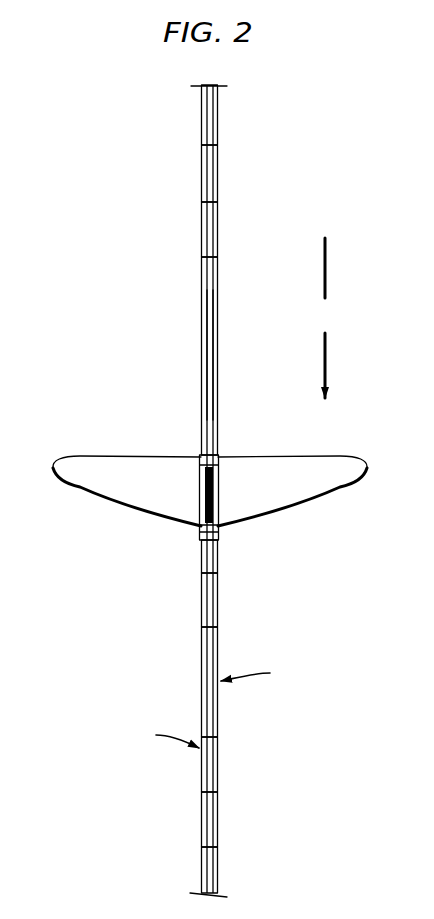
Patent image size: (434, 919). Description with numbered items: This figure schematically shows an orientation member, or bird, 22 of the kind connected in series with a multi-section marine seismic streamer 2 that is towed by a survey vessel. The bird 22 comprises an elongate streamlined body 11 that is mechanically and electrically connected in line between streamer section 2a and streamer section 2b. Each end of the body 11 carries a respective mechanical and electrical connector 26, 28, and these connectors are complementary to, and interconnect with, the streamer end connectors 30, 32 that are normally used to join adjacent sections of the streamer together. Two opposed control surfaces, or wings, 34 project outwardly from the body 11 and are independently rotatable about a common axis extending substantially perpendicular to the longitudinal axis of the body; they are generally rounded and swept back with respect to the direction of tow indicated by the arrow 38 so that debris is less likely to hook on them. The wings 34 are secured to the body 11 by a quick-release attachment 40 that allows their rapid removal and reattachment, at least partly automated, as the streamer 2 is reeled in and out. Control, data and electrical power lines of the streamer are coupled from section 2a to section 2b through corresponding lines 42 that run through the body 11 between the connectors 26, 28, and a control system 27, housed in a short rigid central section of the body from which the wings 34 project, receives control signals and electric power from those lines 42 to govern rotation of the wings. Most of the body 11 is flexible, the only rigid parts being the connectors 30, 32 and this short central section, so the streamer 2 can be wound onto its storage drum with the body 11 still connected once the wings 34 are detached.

The marine seismic streamer 2 is at (190, 108).
The streamer section 2a is at (219, 867).
The streamer section 2b is at (219, 114).
The elongate streamlined body 11 is at (219, 387).
The orientation member (bird) 22 is at (117, 333).
The mechanical and electrical connector 26 is at (200, 770).
The control system 27 is at (200, 590).
The mechanical and electrical connector 28 is at (200, 222).
The streamer end connector 30 is at (200, 820).
The streamer end connector 32 is at (200, 175).
The wings 34 is at (78, 487).
The arrow indicating direction of tow 38 is at (326, 318).
The quick-release attachment 40 is at (199, 498).
The lines 42 is at (200, 316).